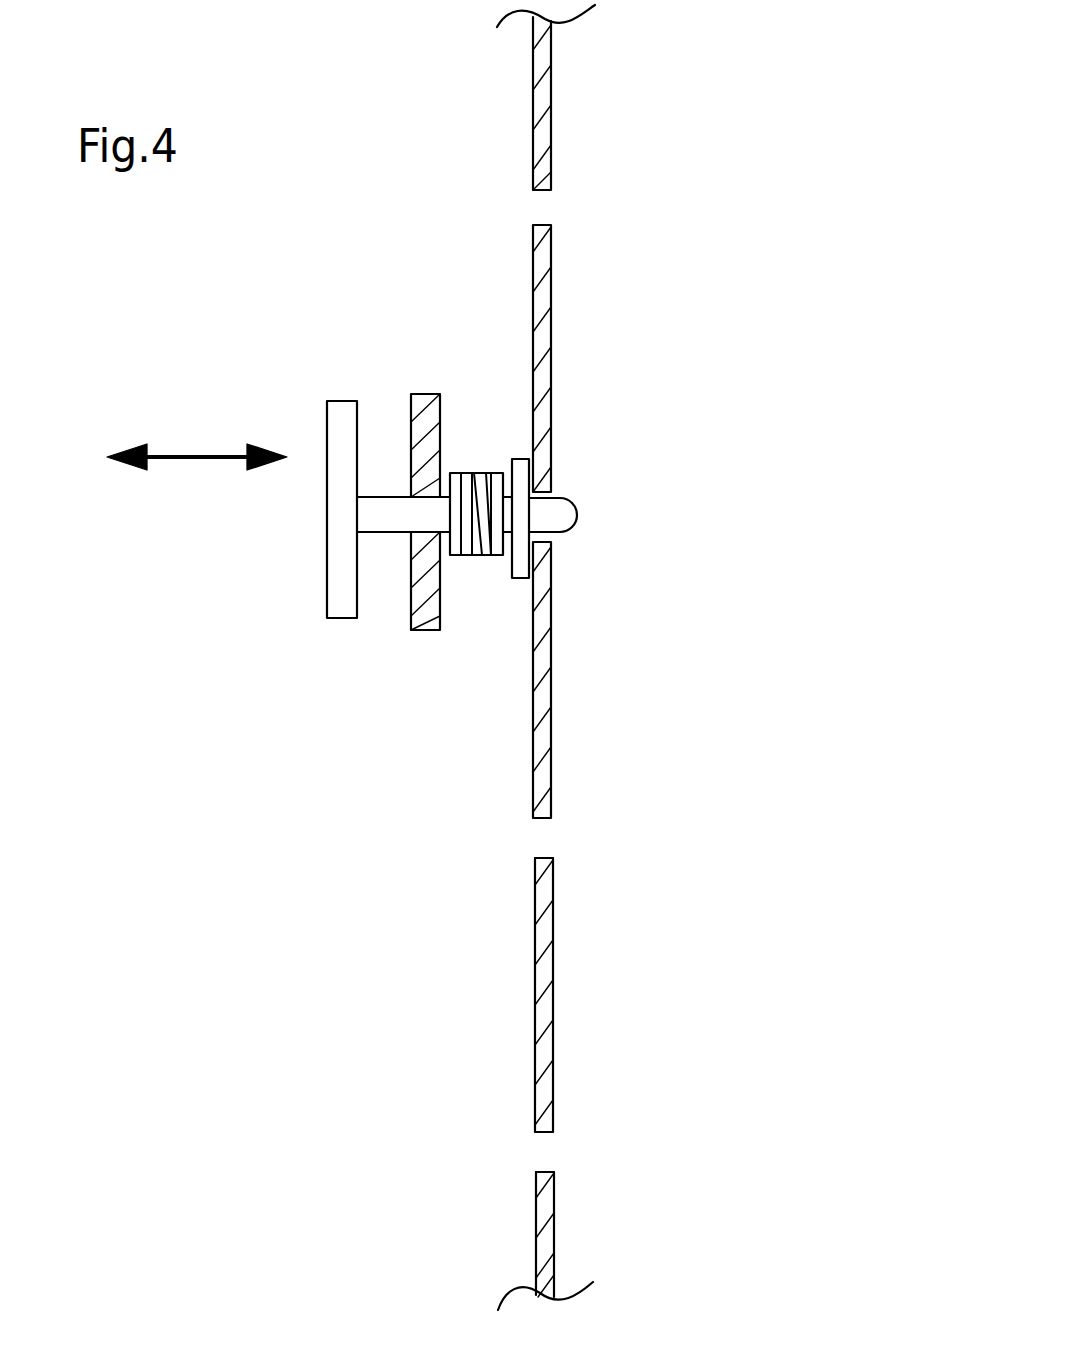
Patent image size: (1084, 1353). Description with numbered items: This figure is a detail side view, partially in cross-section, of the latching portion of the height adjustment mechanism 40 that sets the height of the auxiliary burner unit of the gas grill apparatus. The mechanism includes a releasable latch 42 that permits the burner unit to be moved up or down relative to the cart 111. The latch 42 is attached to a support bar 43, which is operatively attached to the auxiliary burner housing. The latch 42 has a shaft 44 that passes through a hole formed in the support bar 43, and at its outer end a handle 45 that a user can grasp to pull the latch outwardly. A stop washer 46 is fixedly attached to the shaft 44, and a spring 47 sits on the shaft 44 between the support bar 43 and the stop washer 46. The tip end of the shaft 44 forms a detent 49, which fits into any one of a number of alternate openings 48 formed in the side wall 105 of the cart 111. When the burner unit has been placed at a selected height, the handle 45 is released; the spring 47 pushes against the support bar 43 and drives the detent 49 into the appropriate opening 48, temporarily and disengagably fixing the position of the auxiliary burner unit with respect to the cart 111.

The height adjustment mechanism 40 is at (207, 356).
The releasable latch 42 is at (282, 544).
The support bar 43 is at (422, 392).
The shaft 44 is at (382, 520).
The handle 45 is at (343, 620).
The stop washer 46 is at (517, 459).
The spring 47 is at (467, 558).
The openings 48 is at (543, 858).
The detent 49 is at (578, 505).
The side wall 105 is at (535, 985).
The cart 111 is at (615, 656).